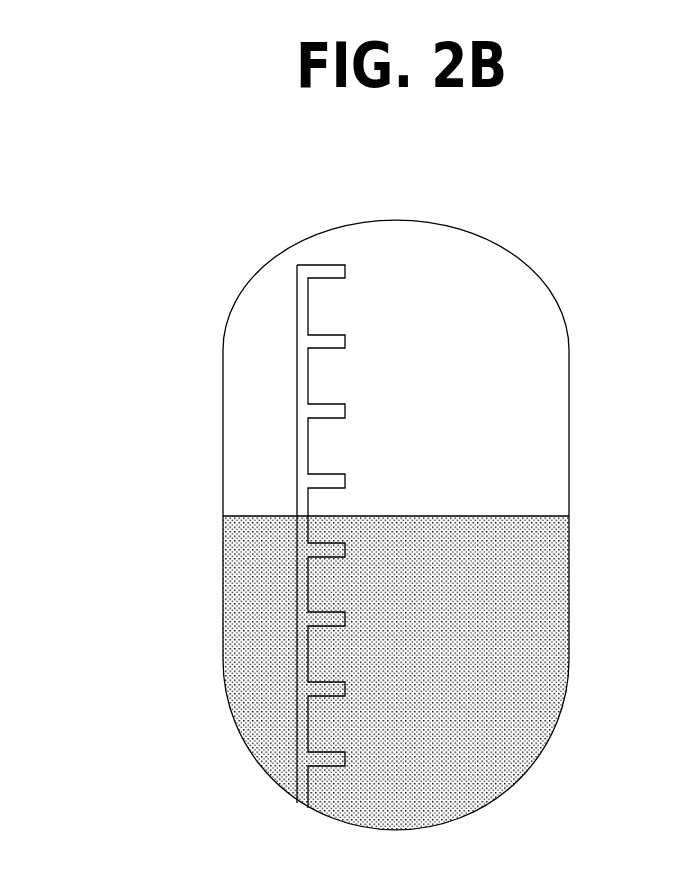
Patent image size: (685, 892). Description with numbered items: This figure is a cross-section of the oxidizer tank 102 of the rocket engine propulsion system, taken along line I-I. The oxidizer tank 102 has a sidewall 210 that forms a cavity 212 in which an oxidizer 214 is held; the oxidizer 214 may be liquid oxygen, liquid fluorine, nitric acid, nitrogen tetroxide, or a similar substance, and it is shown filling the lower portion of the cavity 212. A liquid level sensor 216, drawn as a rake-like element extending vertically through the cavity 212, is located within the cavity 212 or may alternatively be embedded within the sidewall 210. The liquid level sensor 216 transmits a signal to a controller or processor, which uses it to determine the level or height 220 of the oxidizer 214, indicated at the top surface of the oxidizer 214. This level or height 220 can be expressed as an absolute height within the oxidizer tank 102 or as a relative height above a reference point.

The oxidizer tank 102 is at (375, 511).
The sidewall 210 is at (222, 470).
The cavity 212 is at (252, 383).
The oxidizer 214 is at (252, 645).
The liquid level sensor 216 is at (297, 290).
The level or height 220 is at (540, 516).